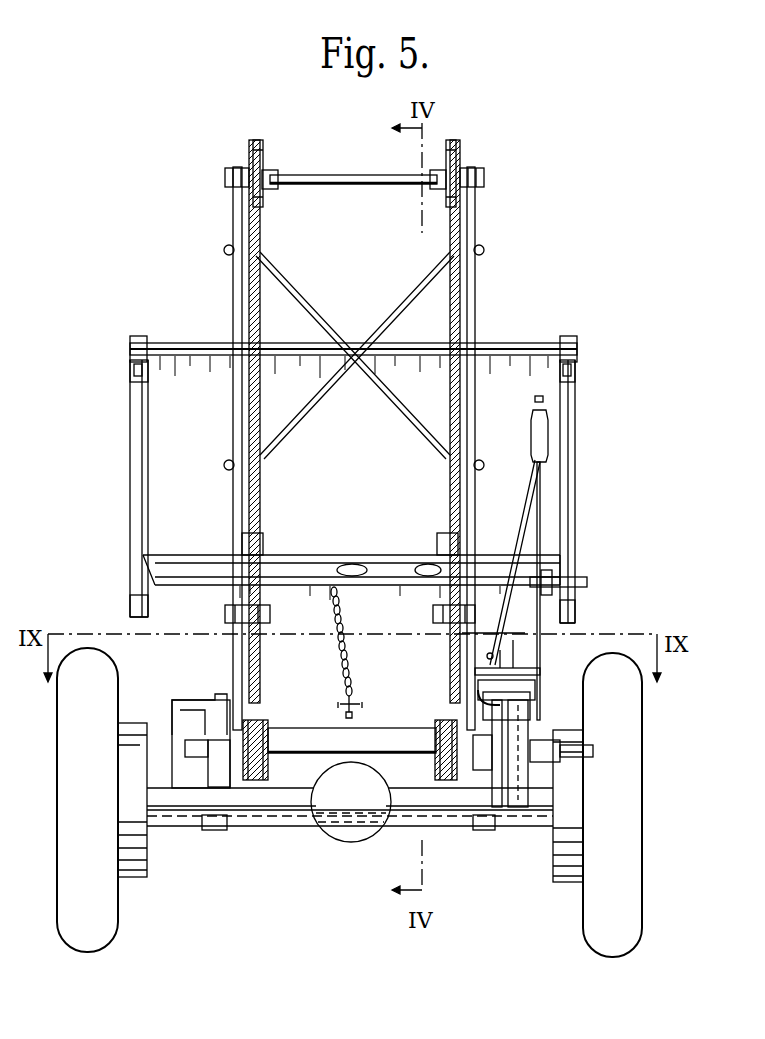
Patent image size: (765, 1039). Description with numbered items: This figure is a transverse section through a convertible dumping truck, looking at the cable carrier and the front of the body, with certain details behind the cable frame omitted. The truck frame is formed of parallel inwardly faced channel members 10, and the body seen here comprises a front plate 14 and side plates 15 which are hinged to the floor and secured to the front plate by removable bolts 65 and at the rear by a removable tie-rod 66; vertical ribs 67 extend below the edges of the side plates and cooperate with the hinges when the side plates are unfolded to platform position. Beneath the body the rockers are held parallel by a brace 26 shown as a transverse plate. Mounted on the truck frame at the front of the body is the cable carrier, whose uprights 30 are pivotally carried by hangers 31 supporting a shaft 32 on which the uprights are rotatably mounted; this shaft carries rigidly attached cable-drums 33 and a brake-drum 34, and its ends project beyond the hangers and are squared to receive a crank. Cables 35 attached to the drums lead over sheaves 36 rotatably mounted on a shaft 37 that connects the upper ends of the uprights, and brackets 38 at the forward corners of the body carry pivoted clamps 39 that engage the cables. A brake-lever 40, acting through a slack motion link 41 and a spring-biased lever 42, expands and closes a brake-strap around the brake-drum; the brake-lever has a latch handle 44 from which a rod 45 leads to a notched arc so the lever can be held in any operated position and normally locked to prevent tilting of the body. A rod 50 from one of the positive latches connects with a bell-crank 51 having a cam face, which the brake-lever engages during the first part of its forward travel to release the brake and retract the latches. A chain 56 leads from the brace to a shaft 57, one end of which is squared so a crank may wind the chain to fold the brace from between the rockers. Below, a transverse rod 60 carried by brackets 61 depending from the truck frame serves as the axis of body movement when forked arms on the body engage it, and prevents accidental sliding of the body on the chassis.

The channel member 10 is at (222, 698).
The front plate 14 is at (528, 360).
The side plate 15 is at (142, 432).
The brace 26 is at (378, 732).
The upright 30 is at (234, 292).
The hanger 31 is at (210, 752).
The shaft 32 is at (318, 752).
The cable-drum 33 is at (268, 722).
The brake-drum 34 is at (516, 808).
The cable 35 is at (260, 232).
The sheave 36 is at (250, 162).
The shaft 37 is at (345, 169).
The bracket 38 is at (262, 548).
The clamp 39 is at (262, 622).
The brake-lever 40 is at (523, 546).
The slack motion link 41 is at (517, 644).
The lever 42 is at (487, 656).
The latch handle 44 is at (531, 428).
The rod 45 is at (522, 490).
The rod 50 is at (476, 666).
The bell-crank 51 is at (540, 672).
The chain 56 is at (348, 641).
The shaft 57 is at (580, 578).
The transverse rod 60 is at (310, 826).
The bracket 61 is at (214, 830).
The removable bolt 65 is at (347, 377).
The tie-rod 66 is at (220, 345).
The vertical rib 67 is at (130, 597).